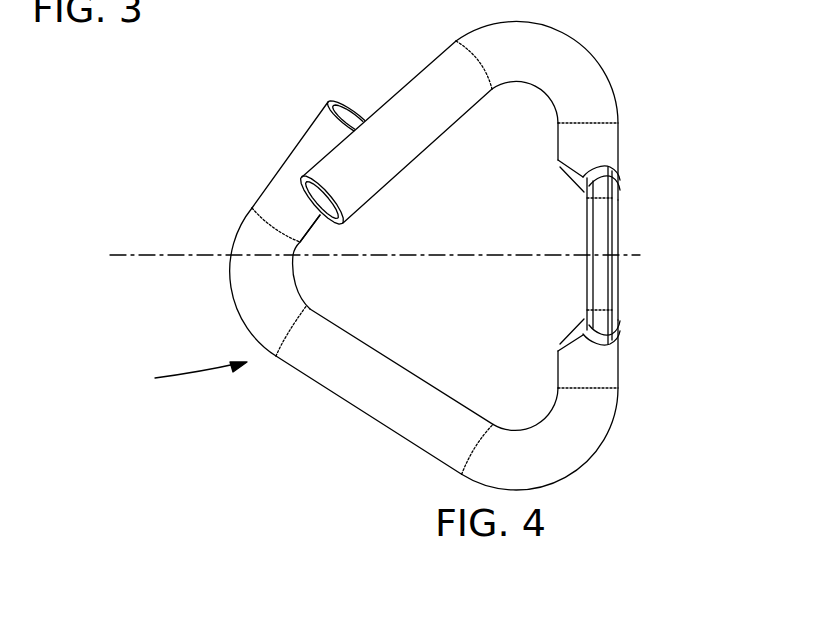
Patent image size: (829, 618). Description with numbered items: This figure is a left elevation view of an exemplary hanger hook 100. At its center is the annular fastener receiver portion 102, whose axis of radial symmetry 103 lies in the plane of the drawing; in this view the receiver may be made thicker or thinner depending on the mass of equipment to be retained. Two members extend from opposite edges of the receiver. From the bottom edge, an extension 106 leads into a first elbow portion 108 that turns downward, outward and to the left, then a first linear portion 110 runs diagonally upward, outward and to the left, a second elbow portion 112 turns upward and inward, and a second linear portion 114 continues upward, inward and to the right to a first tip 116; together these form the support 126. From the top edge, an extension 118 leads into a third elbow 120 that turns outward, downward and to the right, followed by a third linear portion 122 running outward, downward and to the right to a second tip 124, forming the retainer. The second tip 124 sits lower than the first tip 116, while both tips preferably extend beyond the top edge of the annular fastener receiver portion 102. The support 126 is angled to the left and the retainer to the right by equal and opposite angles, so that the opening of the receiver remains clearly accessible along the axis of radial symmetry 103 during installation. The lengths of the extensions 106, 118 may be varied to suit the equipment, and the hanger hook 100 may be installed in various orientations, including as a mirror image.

The hanger hook 100 is at (202, 455).
The annular fastener receiver portion 102 is at (603, 292).
The axis of radial symmetry 103 is at (520, 262).
The extension 106 is at (603, 367).
The first elbow portion 108 is at (597, 428).
The first linear portion 110 is at (352, 395).
The second elbow portion 112 is at (255, 291).
The second linear portion 114 is at (290, 165).
The first tip 116 is at (355, 110).
The extension 118 is at (603, 147).
The third elbow 120 is at (545, 32).
The third linear portion 122 is at (450, 62).
The second tip 124 is at (330, 212).
The support 126 is at (178, 375).